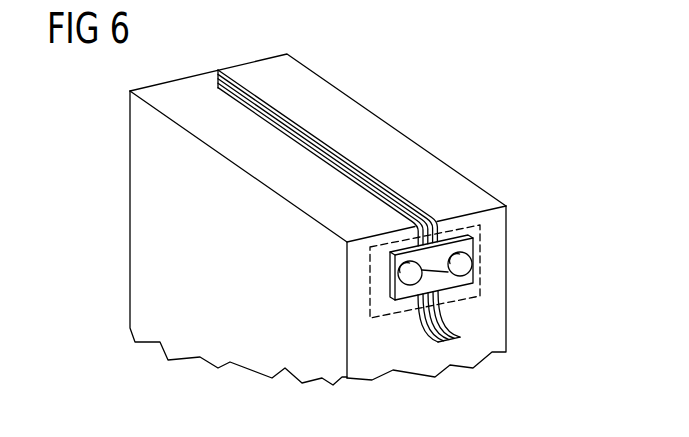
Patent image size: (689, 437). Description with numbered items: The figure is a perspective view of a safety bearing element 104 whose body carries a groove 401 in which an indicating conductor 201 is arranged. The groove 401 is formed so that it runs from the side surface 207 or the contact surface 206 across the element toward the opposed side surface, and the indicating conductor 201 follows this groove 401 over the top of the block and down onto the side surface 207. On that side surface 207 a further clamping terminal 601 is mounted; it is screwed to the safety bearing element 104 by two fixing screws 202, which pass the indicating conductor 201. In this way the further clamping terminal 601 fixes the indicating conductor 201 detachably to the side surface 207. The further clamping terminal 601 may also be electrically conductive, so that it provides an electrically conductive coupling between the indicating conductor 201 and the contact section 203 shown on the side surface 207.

The safety bearing element 104 is at (135, 235).
The groove 401 is at (214, 79).
The contact surface 206 is at (408, 149).
The side surface 207 is at (493, 333).
The contact section 203 is at (370, 290).
The further clamping terminal 601 is at (478, 295).
The fixing screws 202 is at (440, 282).
The indicating conductor 201 is at (423, 327).